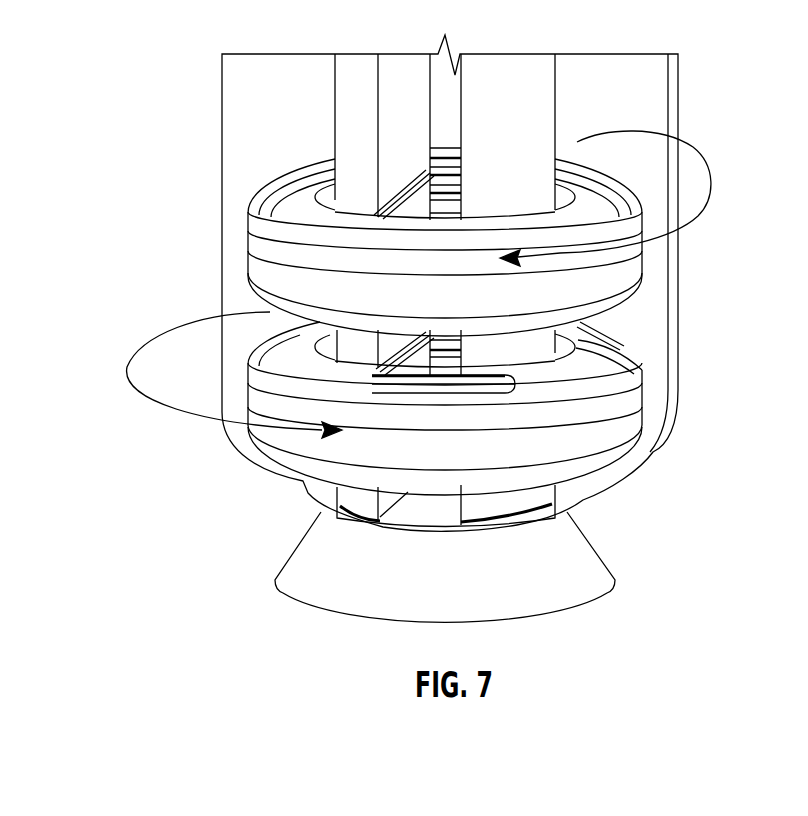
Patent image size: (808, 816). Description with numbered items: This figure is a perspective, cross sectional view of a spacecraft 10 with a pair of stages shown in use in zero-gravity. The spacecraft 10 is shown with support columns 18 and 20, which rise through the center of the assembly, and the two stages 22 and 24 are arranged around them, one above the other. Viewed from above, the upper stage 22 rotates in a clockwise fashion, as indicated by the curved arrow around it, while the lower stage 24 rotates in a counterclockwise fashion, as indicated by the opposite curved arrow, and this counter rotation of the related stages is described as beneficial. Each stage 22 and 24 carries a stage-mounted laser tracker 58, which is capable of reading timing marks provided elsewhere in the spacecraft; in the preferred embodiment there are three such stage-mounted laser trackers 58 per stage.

The spacecraft 10 is at (730, 65).
The support column 18 is at (353, 153).
The support column 20 is at (537, 132).
The stage 22 is at (625, 270).
The stage 24 is at (613, 425).
The stage-mounted laser tracker 58 is at (356, 207).